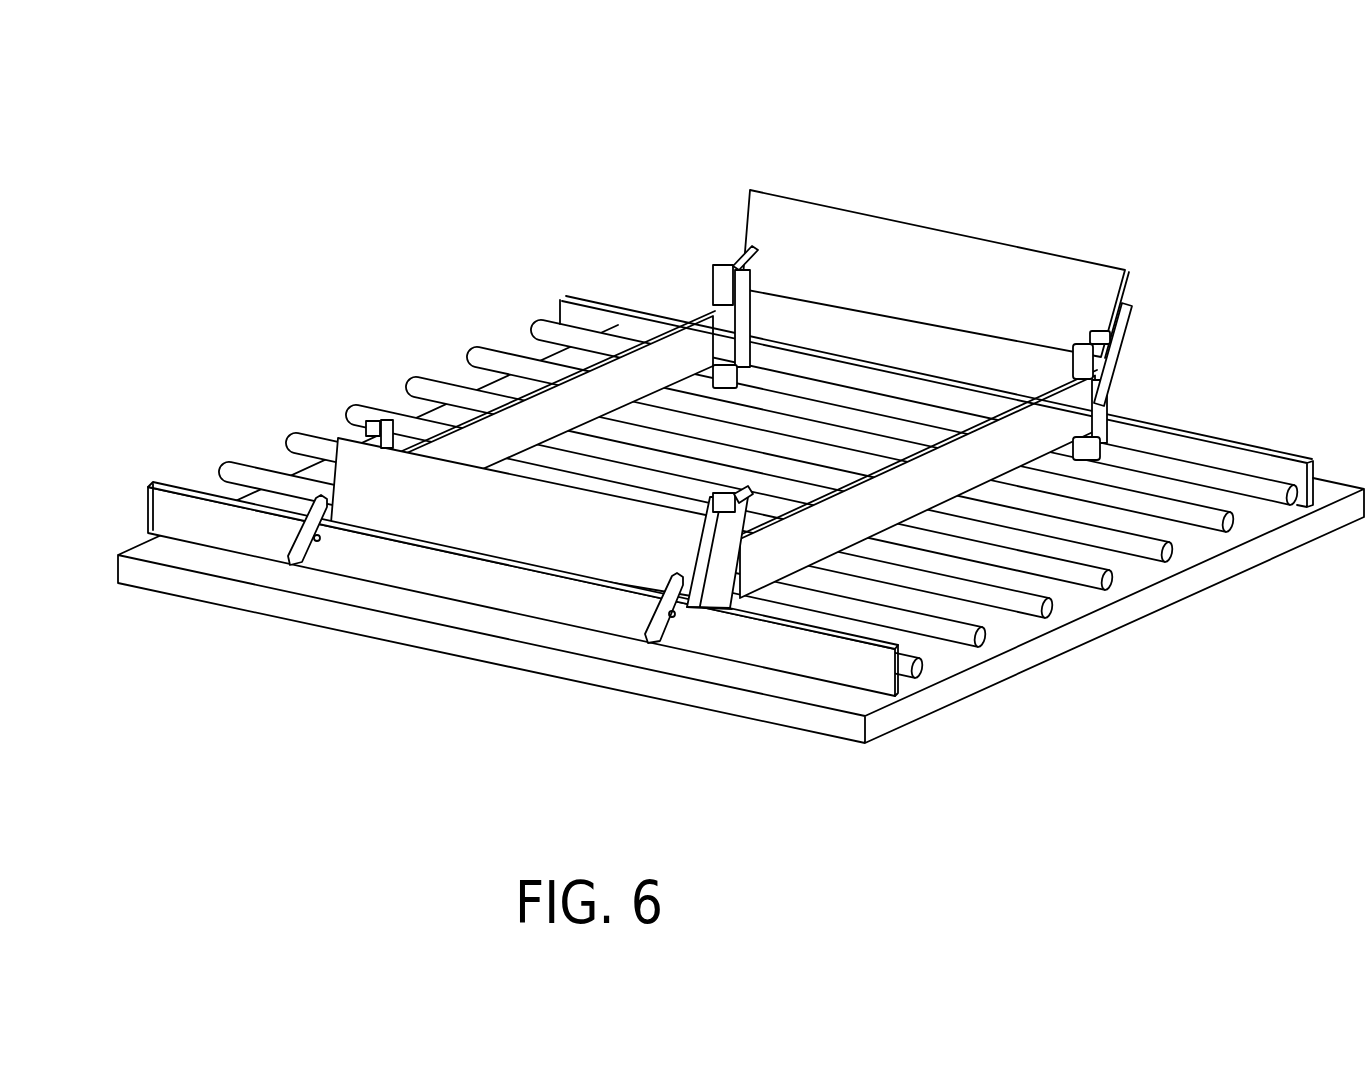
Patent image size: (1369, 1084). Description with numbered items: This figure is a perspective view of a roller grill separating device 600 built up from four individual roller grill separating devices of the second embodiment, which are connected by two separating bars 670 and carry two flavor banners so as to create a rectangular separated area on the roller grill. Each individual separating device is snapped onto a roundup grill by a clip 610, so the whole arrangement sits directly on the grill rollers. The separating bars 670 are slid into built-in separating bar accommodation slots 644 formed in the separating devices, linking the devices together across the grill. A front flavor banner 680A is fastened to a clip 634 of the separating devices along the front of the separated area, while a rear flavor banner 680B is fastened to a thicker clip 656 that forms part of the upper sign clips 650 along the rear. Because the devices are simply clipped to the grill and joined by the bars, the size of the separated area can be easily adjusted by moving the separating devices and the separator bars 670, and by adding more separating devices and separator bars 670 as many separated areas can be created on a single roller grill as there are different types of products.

The roller grill separating device 600 is at (350, 262).
The clip 610 is at (742, 381).
The clip 634 is at (328, 519).
The separating bar accommodation slot 644 is at (712, 300).
The upper sign clip 650 is at (1078, 362).
The thicker clip 656 is at (743, 253).
The separating bar 670 is at (562, 413).
The front flavor banner 680A is at (493, 520).
The rear flavor banner 680B is at (913, 253).